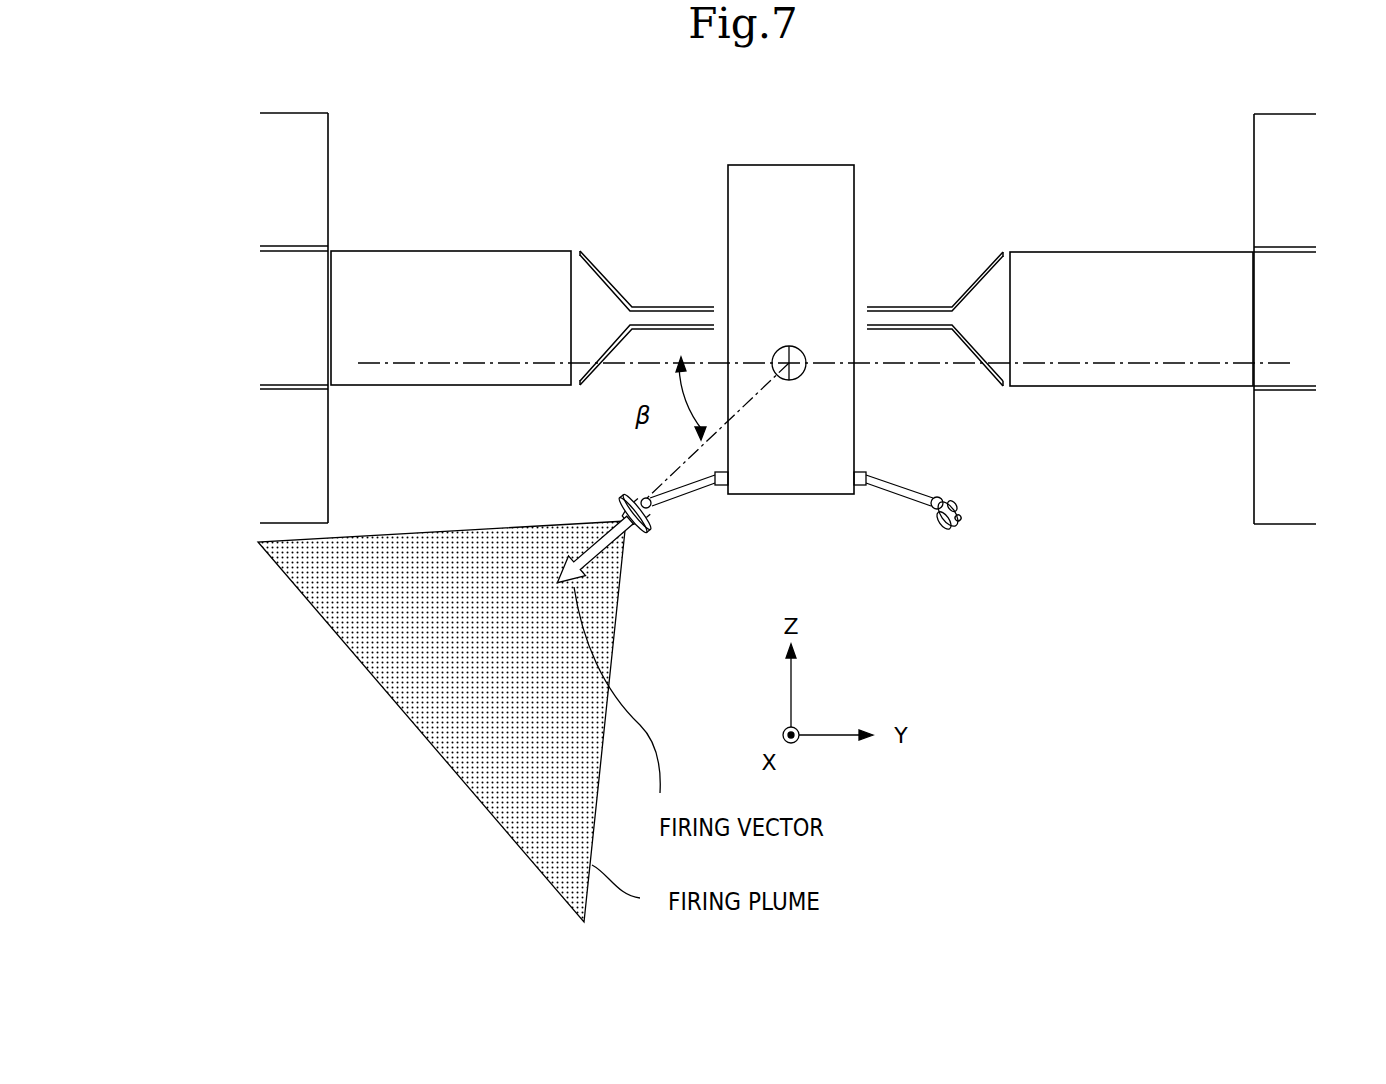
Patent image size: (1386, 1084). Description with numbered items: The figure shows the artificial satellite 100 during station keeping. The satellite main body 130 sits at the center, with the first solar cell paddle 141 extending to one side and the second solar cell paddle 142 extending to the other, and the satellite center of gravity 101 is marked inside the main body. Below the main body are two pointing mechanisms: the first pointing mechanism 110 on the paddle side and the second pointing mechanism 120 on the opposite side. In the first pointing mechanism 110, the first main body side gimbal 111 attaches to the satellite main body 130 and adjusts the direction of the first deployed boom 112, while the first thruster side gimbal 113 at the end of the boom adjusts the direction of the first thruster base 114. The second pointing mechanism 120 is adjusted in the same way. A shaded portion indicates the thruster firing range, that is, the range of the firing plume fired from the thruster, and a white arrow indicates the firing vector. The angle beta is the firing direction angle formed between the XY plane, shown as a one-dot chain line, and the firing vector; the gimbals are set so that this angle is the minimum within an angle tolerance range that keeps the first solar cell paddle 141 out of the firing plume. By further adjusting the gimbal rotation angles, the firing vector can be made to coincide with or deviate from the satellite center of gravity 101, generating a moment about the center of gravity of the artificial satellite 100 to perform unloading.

The artificial satellite 100 is at (788, 290).
The satellite center of gravity 101 is at (785, 340).
The first pointing mechanism 110 is at (648, 548).
The first main body side gimbal 111 is at (718, 496).
The first deployed boom 112 is at (677, 512).
The first thruster side gimbal 113 is at (636, 490).
The first thruster base 114 is at (615, 490).
The second pointing mechanism 120 is at (913, 467).
The satellite main body 130 is at (771, 165).
The first solar cell paddle 141 is at (439, 251).
The second solar cell paddle 142 is at (1094, 252).